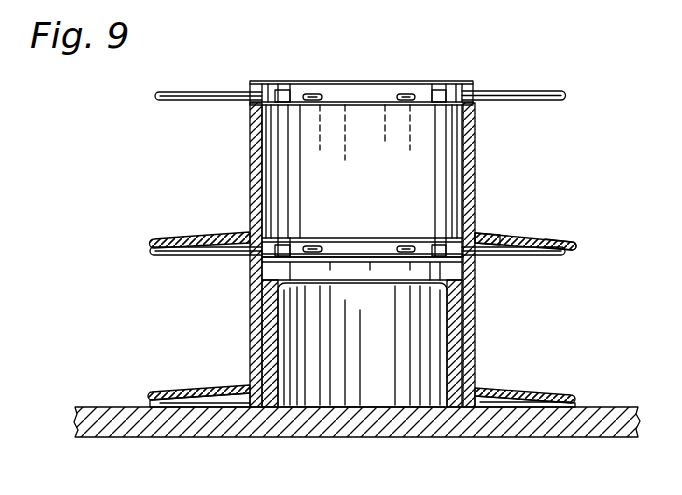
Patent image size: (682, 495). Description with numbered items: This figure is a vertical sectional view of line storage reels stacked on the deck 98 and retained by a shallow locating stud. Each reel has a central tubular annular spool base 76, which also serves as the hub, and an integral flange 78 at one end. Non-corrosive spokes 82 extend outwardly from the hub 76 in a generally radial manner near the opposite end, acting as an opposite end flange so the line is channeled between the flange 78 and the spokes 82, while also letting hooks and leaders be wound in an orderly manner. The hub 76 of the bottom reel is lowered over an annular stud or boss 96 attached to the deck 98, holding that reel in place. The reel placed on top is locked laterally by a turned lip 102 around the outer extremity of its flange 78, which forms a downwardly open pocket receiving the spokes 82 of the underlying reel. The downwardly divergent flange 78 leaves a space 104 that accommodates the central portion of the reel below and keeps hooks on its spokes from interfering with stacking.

The spool base 76 is at (472, 152).
The flange 78 is at (528, 237).
The spokes 82 is at (192, 101).
The annular stud 96 is at (447, 335).
The deck 98 is at (366, 405).
The turned lip 102 is at (578, 250).
The space 104 is at (478, 238).